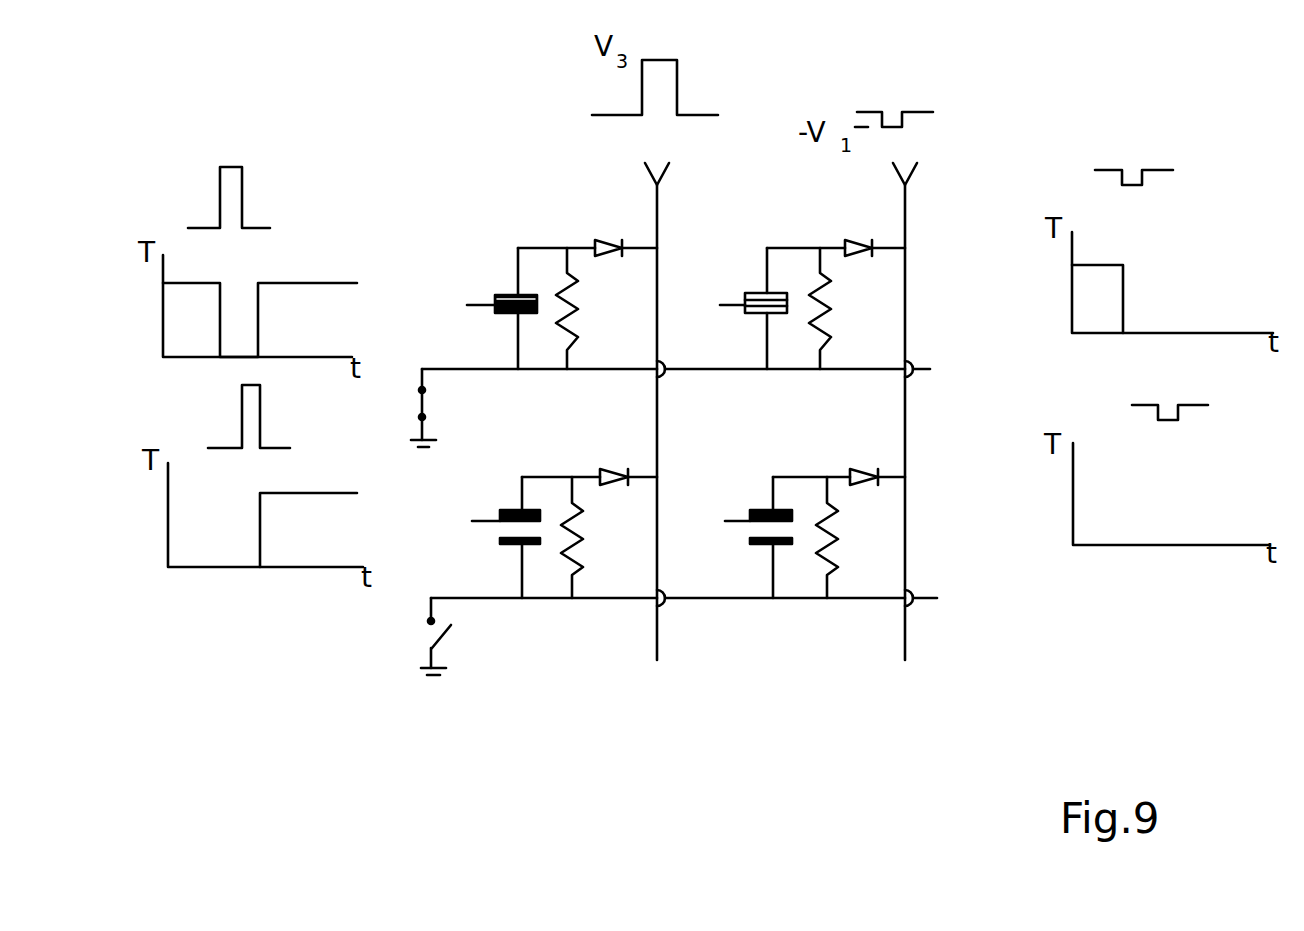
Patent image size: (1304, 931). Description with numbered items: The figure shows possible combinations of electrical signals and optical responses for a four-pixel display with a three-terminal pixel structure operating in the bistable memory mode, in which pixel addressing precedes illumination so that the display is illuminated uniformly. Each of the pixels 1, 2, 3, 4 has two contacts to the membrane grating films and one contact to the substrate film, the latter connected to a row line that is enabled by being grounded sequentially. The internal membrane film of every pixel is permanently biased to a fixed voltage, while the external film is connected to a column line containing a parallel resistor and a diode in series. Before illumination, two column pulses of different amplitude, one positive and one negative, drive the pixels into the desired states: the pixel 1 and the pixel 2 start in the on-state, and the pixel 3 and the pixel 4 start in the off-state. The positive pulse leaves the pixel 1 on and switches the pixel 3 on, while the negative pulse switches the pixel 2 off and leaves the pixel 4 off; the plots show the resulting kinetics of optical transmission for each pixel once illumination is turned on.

The pixel 1 is at (538, 271).
The pixel 2 is at (793, 273).
The pixel 3 is at (545, 506).
The pixel 4 is at (795, 502).